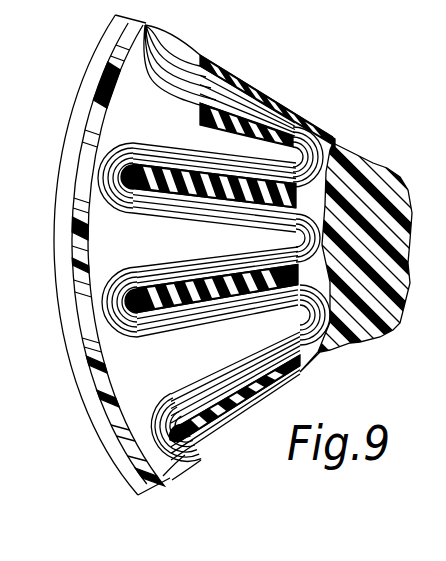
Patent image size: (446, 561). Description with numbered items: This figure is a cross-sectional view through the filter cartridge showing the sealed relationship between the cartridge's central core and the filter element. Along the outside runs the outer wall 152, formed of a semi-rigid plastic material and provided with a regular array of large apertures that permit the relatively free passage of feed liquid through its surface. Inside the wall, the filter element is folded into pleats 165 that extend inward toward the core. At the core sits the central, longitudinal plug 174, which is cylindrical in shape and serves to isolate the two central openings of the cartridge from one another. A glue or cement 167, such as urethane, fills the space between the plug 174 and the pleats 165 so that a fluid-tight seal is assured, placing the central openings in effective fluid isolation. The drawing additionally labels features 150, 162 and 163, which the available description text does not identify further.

The curved shell wall 150 is at (61, 108).
The outer wall 152 is at (93, 357).
The membrane pleat 162 is at (164, 131).
The pleat fold 163 is at (320, 137).
The pleats 165 is at (240, 124).
The glue or cement 167 is at (267, 103).
The central longitudinal plug 174 is at (379, 172).